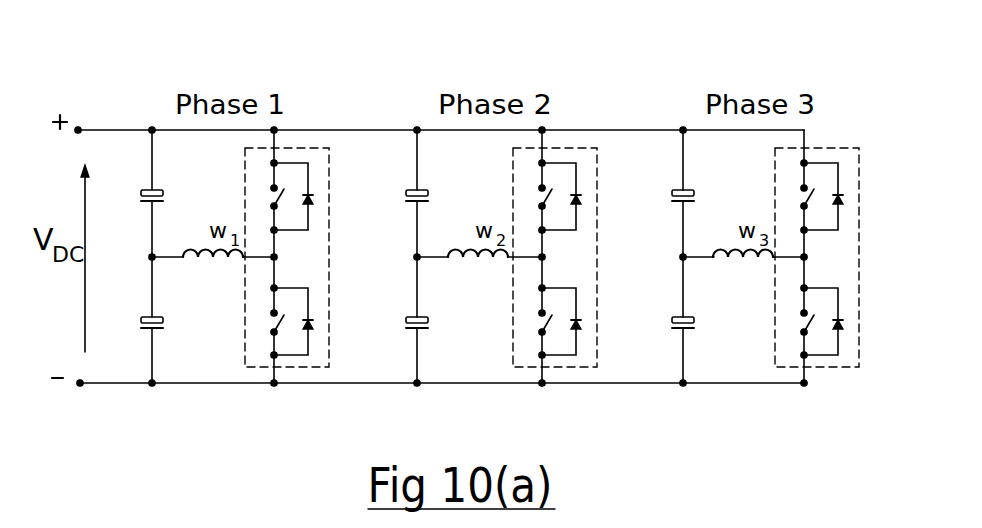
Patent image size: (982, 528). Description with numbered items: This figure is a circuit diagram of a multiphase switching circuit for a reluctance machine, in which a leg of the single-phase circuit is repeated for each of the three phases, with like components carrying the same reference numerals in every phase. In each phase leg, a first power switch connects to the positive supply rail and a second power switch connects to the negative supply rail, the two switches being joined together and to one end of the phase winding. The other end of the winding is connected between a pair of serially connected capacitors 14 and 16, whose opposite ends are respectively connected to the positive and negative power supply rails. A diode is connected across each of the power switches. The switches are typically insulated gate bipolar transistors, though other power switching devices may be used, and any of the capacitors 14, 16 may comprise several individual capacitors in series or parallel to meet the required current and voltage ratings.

The capacitor 14 is at (158, 193).
The capacitor 16 is at (158, 317).